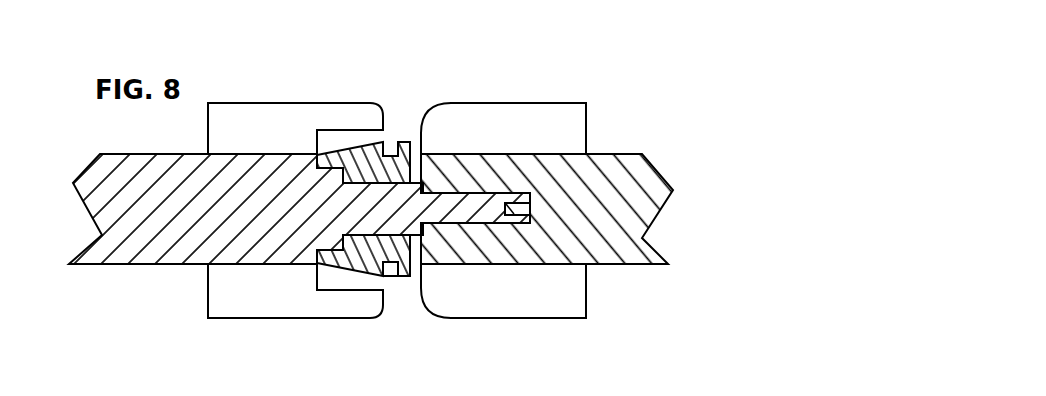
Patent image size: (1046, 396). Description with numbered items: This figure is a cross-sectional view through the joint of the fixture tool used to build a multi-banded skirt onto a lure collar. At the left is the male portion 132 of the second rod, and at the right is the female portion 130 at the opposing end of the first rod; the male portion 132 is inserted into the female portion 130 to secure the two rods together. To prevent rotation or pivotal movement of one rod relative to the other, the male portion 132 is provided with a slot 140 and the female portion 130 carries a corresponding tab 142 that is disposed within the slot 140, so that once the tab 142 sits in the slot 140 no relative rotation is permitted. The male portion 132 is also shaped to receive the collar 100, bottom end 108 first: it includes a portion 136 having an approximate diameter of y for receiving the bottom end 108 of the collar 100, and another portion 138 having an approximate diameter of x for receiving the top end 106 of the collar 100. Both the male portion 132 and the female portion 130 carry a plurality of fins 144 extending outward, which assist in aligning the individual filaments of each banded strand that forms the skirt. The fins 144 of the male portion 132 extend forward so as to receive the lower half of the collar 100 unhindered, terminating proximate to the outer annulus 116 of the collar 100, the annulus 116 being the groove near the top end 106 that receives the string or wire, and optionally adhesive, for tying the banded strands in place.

The collar 100 is at (412, 287).
The top end 106 is at (405, 145).
The bottom end 108 is at (318, 252).
The outer annulus 116 is at (394, 278).
The female portion 130 is at (612, 153).
The male portion 132 is at (127, 153).
The portion having diameter y 136 is at (332, 165).
The portion having diameter x 138 is at (378, 240).
The slot 140 is at (525, 196).
The tab 142 is at (535, 213).
The fins 144 is at (272, 102).